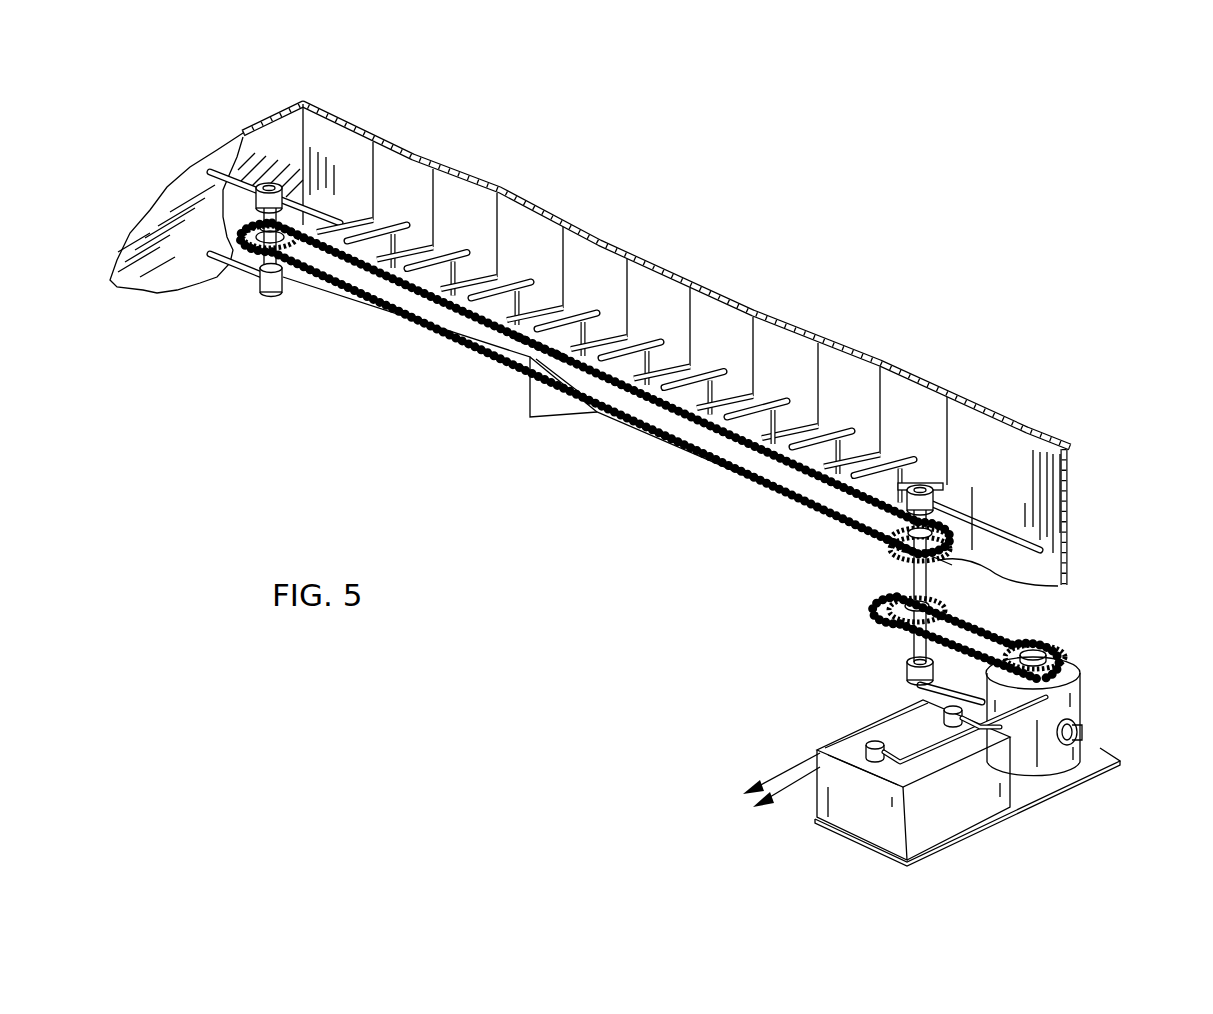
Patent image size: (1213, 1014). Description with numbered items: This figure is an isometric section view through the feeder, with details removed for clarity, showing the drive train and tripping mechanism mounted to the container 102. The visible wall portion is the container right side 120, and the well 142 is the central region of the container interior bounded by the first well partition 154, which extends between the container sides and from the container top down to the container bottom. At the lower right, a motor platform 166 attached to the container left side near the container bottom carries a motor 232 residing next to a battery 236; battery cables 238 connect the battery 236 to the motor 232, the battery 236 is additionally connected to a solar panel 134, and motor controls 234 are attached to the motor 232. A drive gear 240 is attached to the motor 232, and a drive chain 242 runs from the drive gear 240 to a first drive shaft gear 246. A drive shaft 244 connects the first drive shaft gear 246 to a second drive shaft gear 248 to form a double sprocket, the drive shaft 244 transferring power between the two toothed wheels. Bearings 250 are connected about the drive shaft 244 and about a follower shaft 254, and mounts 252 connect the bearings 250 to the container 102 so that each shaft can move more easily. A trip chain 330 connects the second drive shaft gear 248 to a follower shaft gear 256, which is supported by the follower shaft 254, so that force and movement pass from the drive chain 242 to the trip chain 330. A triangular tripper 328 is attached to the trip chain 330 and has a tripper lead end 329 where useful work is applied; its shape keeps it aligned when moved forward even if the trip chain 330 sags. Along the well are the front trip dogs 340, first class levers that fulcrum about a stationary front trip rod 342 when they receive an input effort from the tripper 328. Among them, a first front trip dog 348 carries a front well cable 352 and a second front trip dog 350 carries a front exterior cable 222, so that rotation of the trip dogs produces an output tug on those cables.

The container 102 is at (258, 132).
The container right side 120 is at (160, 190).
The well 142 is at (150, 245).
The mounts 252 is at (225, 172).
The follower shaft 254 is at (255, 242).
The follower shaft gear 256 is at (240, 253).
The bearings 250 is at (267, 293).
The front trip dogs 340 is at (392, 214).
The front trip rod 342 is at (748, 392).
The front exterior cable 222 is at (493, 277).
The first well partition 154 is at (742, 410).
The trip chain 330 is at (463, 371).
The second front trip dog 350 is at (523, 330).
The first front trip dog 348 is at (545, 340).
The front well cable 352 is at (560, 350).
The tripper 328 is at (537, 405).
The tripper lead end 329 is at (577, 407).
The second drive shaft gear 248 is at (913, 567).
The drive shaft 244 is at (893, 600).
The first drive shaft gear 246 is at (897, 623).
The drive gear 240 is at (1058, 652).
The drive chain 242 is at (1066, 662).
The motor 232 is at (1082, 690).
The motor controls 234 is at (1078, 720).
The motor platform 166 is at (1070, 782).
The battery 236 is at (948, 813).
The battery cables 238 is at (992, 732).
The solar panel 134 is at (754, 791).